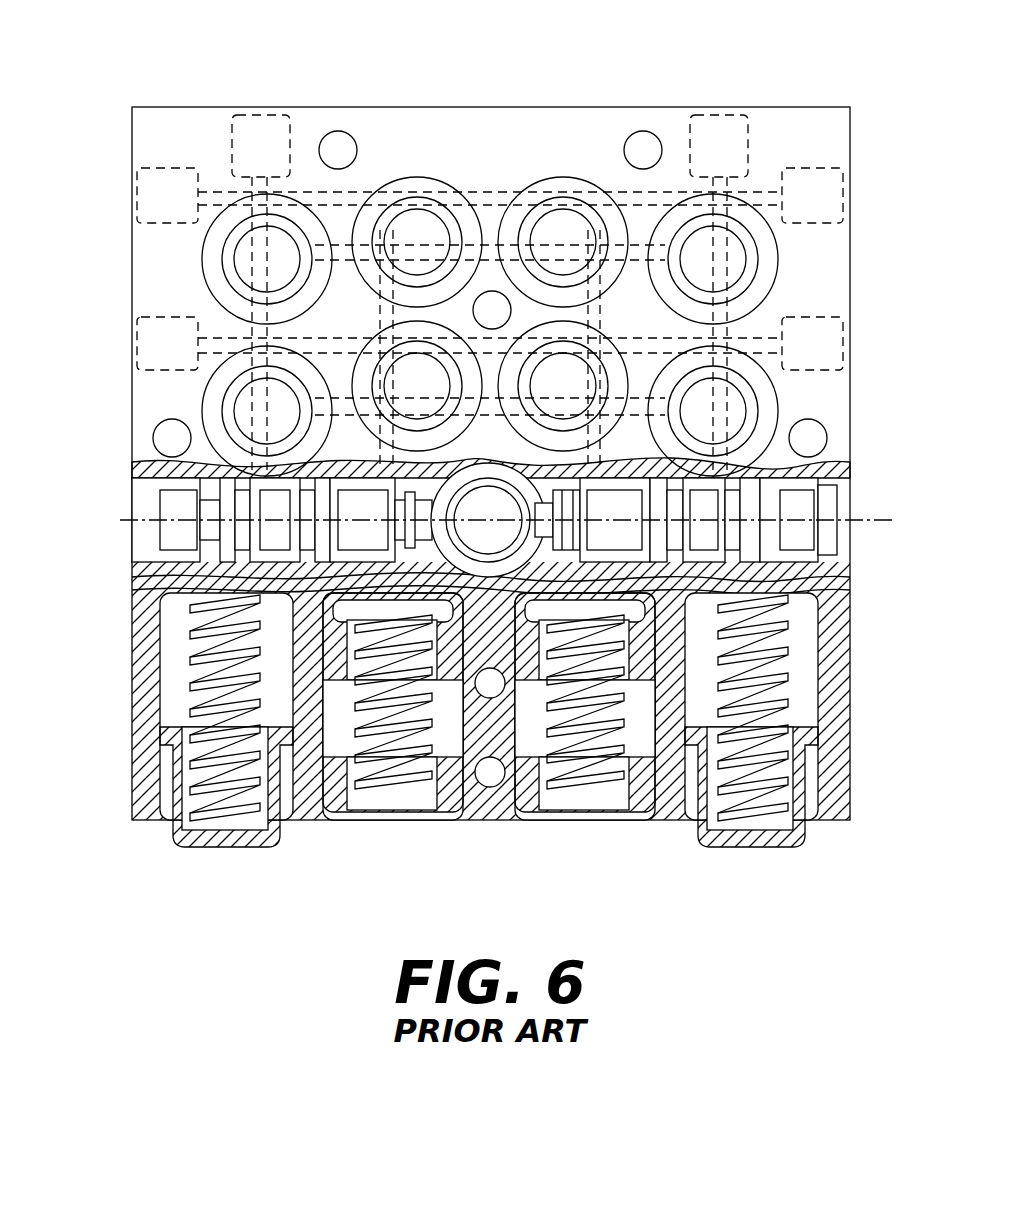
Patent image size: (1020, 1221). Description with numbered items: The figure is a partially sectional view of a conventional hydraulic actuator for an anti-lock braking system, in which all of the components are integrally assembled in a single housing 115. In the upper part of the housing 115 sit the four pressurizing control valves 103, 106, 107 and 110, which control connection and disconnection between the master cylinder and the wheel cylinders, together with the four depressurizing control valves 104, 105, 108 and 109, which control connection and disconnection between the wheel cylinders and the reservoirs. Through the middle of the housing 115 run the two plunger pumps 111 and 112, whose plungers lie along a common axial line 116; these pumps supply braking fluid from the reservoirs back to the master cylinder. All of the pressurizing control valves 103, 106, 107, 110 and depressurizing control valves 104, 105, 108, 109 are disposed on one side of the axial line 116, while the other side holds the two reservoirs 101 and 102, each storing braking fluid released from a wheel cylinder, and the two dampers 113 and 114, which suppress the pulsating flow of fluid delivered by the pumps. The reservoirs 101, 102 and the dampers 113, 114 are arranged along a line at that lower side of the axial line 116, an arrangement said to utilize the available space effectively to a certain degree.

The reservoir 101 is at (395, 823).
The reservoir 102 is at (590, 823).
The pressurizing control valve 103 is at (300, 212).
The depressurizing control valve 104 is at (390, 208).
The depressurizing control valve 105 is at (598, 210).
The pressurizing control valve 106 is at (757, 208).
The pressurizing control valve 107 is at (205, 400).
The depressurizing control valve 108 is at (363, 352).
The depressurizing control valve 109 is at (606, 352).
The pressurizing control valve 110 is at (790, 400).
The plunger pump 111 is at (142, 527).
The plunger pump 112 is at (835, 552).
The damper 113 is at (200, 845).
The damper 114 is at (780, 848).
The housing 115 is at (850, 253).
The axial line 116 is at (865, 520).